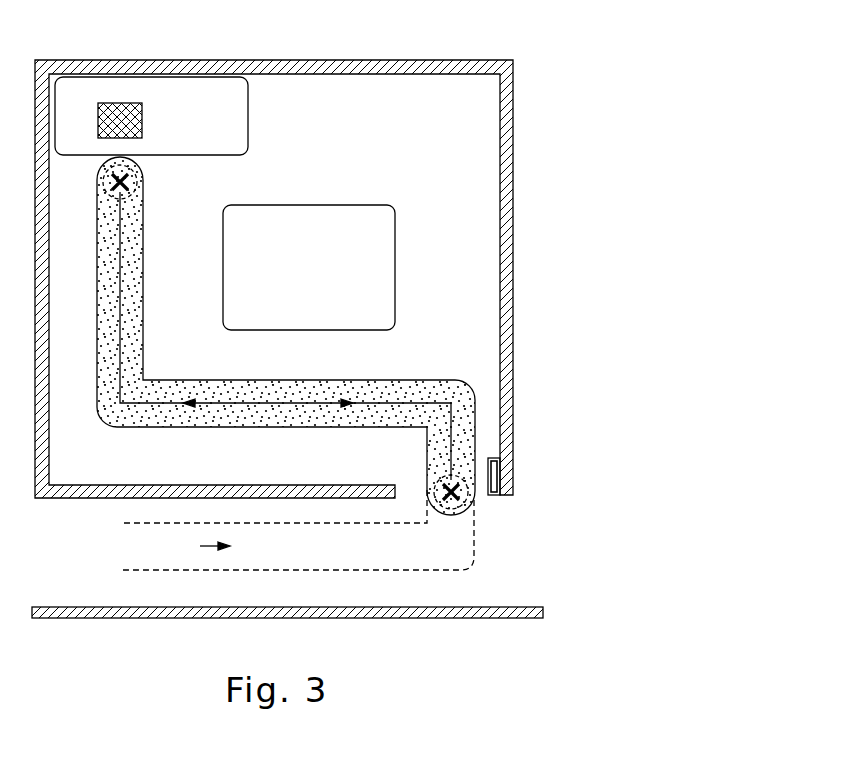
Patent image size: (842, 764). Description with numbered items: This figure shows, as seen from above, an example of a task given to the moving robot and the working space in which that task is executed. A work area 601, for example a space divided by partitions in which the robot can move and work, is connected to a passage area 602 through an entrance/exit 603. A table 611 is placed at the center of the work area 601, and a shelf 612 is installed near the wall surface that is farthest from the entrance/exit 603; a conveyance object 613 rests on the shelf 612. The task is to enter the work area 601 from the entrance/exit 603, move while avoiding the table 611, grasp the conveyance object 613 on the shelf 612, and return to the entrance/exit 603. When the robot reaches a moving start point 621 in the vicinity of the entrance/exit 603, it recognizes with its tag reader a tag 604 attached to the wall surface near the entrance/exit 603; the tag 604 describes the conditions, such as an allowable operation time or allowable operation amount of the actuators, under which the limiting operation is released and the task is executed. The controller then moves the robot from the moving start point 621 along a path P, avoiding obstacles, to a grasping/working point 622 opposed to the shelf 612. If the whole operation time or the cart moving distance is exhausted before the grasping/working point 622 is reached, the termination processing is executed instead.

The work area 601 is at (477, 85).
The passage area 602 is at (84, 578).
The entrance/exit 603 is at (410, 481).
The tag 604 is at (513, 470).
The table 611 is at (375, 200).
The shelf 612 is at (248, 125).
The conveyance object 613 is at (142, 120).
The moving start point 621 is at (463, 494).
The grasping/working point 622 is at (138, 192).
The path P is at (398, 368).